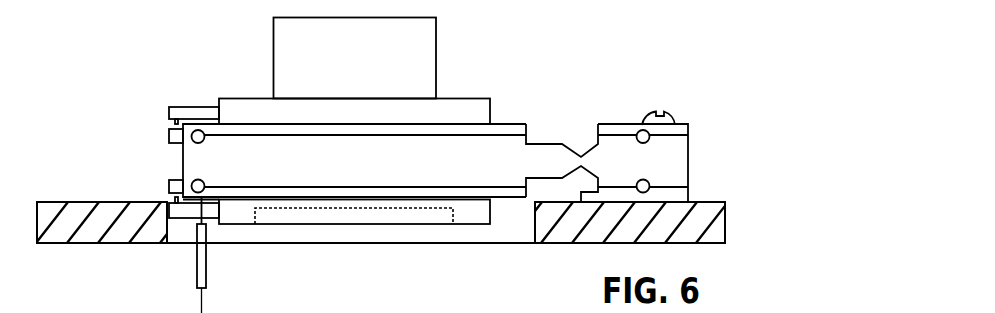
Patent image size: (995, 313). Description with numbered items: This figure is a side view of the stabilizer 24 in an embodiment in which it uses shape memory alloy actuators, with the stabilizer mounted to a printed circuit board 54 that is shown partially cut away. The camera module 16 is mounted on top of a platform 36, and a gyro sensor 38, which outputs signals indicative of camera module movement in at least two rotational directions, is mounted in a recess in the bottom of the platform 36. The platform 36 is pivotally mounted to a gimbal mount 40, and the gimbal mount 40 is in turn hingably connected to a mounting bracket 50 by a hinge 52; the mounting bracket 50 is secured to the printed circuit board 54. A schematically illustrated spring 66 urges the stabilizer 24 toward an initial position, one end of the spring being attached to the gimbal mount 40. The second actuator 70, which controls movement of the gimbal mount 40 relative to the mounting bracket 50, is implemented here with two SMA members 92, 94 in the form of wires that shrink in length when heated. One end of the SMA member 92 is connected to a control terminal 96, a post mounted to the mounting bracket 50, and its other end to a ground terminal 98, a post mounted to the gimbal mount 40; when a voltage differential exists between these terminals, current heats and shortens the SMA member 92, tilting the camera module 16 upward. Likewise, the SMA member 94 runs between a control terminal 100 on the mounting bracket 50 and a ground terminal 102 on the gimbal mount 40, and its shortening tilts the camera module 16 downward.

The camera module 16 is at (436, 50).
The stabilizer 24 is at (113, 86).
The platform 36 is at (484, 98).
The gyro sensor 38 is at (427, 215).
The gimbal mount 40 is at (512, 125).
The mounting bracket 50 is at (614, 125).
The hinge 52 is at (582, 131).
The printed circuit board 54 is at (42, 202).
The spring 66 is at (197, 270).
The second actuator 70 is at (236, 206).
The SMA member 92 is at (247, 134).
The SMA member 94 is at (509, 187).
The control terminal 96 is at (688, 136).
The ground terminal 98 is at (197, 130).
The control terminal 100 is at (651, 184).
The ground terminal 102 is at (194, 181).